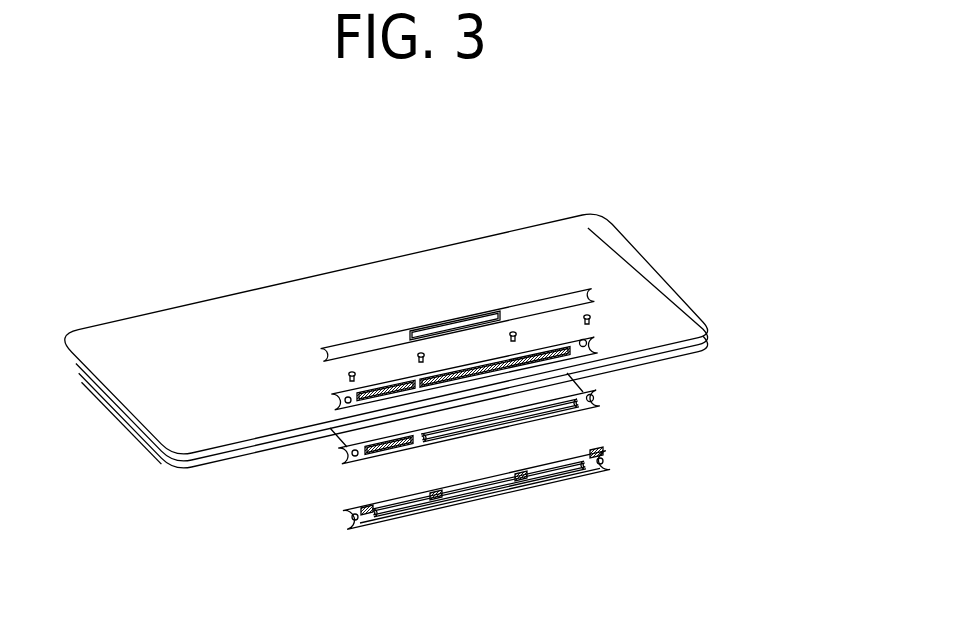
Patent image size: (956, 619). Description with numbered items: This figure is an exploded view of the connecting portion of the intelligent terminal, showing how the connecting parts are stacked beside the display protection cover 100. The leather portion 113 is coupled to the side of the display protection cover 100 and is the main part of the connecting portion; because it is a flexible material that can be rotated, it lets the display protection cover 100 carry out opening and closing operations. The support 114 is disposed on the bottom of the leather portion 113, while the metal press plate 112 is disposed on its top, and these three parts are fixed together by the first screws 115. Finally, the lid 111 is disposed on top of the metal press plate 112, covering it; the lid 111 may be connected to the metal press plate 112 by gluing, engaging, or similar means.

The display protection cover 100 is at (420, 282).
The lid 111 is at (550, 300).
The metal press plate 112 is at (583, 340).
The leather portion 113 is at (606, 394).
The support 114 is at (617, 461).
The first screws 115 is at (512, 334).